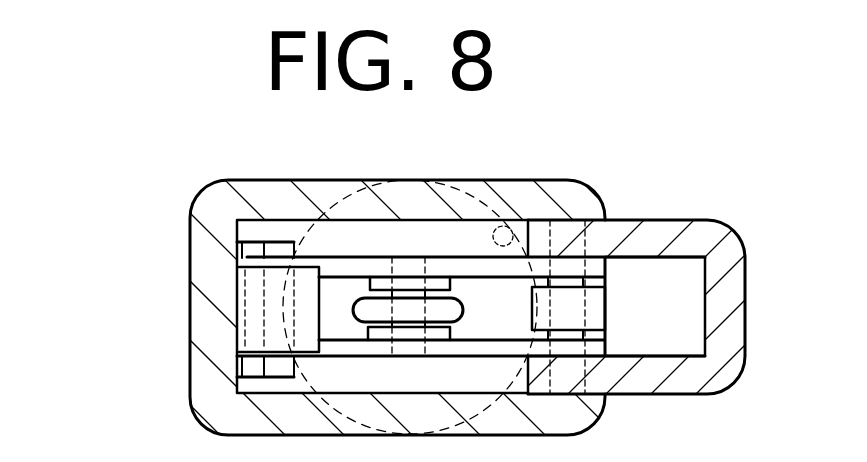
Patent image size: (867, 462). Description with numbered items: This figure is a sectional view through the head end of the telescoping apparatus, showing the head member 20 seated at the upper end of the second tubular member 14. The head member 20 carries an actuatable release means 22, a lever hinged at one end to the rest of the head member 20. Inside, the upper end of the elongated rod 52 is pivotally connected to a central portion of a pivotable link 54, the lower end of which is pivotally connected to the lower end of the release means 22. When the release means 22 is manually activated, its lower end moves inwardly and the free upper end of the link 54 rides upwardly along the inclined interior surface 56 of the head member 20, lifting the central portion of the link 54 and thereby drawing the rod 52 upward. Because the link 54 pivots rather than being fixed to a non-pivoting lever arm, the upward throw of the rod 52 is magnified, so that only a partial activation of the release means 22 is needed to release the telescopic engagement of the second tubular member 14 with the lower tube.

The second tubular member 14 is at (527, 181).
The head member 20 is at (193, 316).
The release means 22 is at (745, 313).
The rod 52 is at (462, 312).
The link 54 is at (340, 258).
The inclined interior surface 56 is at (247, 382).